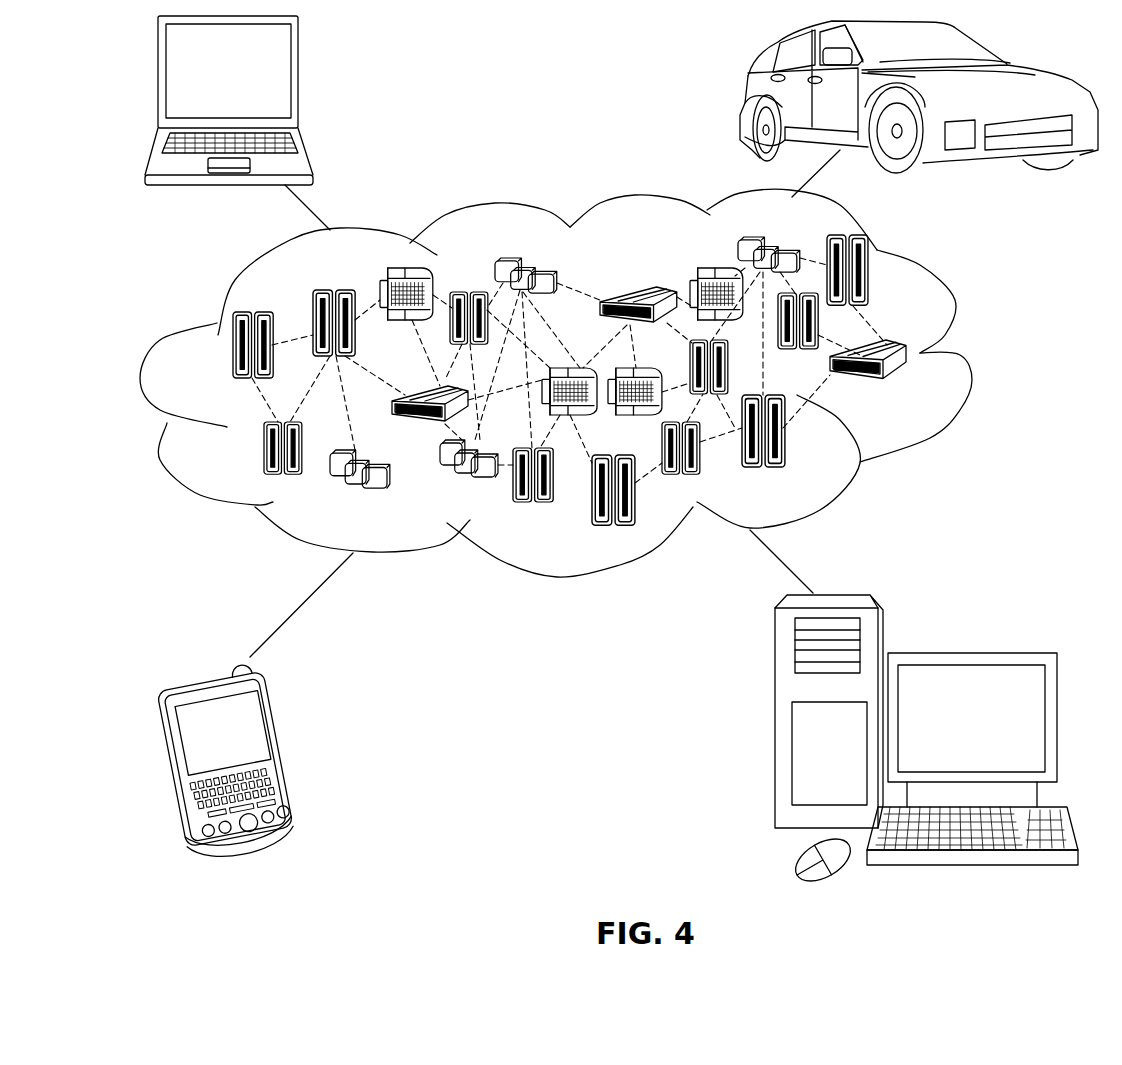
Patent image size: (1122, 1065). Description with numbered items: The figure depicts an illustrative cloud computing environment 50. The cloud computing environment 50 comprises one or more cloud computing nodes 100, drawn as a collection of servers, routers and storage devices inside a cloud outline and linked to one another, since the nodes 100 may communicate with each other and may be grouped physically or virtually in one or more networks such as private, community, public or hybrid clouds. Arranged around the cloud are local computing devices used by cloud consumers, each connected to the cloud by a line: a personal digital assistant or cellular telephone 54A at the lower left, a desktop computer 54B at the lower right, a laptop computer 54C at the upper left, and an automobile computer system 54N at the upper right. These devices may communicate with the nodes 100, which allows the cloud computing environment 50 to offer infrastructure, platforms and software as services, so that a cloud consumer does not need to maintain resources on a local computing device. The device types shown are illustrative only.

The cloud computing environment 50 is at (968, 358).
The cloud computing nodes 100 is at (914, 389).
The personal digital assistant (PDA) or cellular telephone 54A is at (292, 748).
The desktop computer 54B is at (968, 652).
The laptop computer 54C is at (302, 82).
The automobile computer system 54N is at (743, 97).